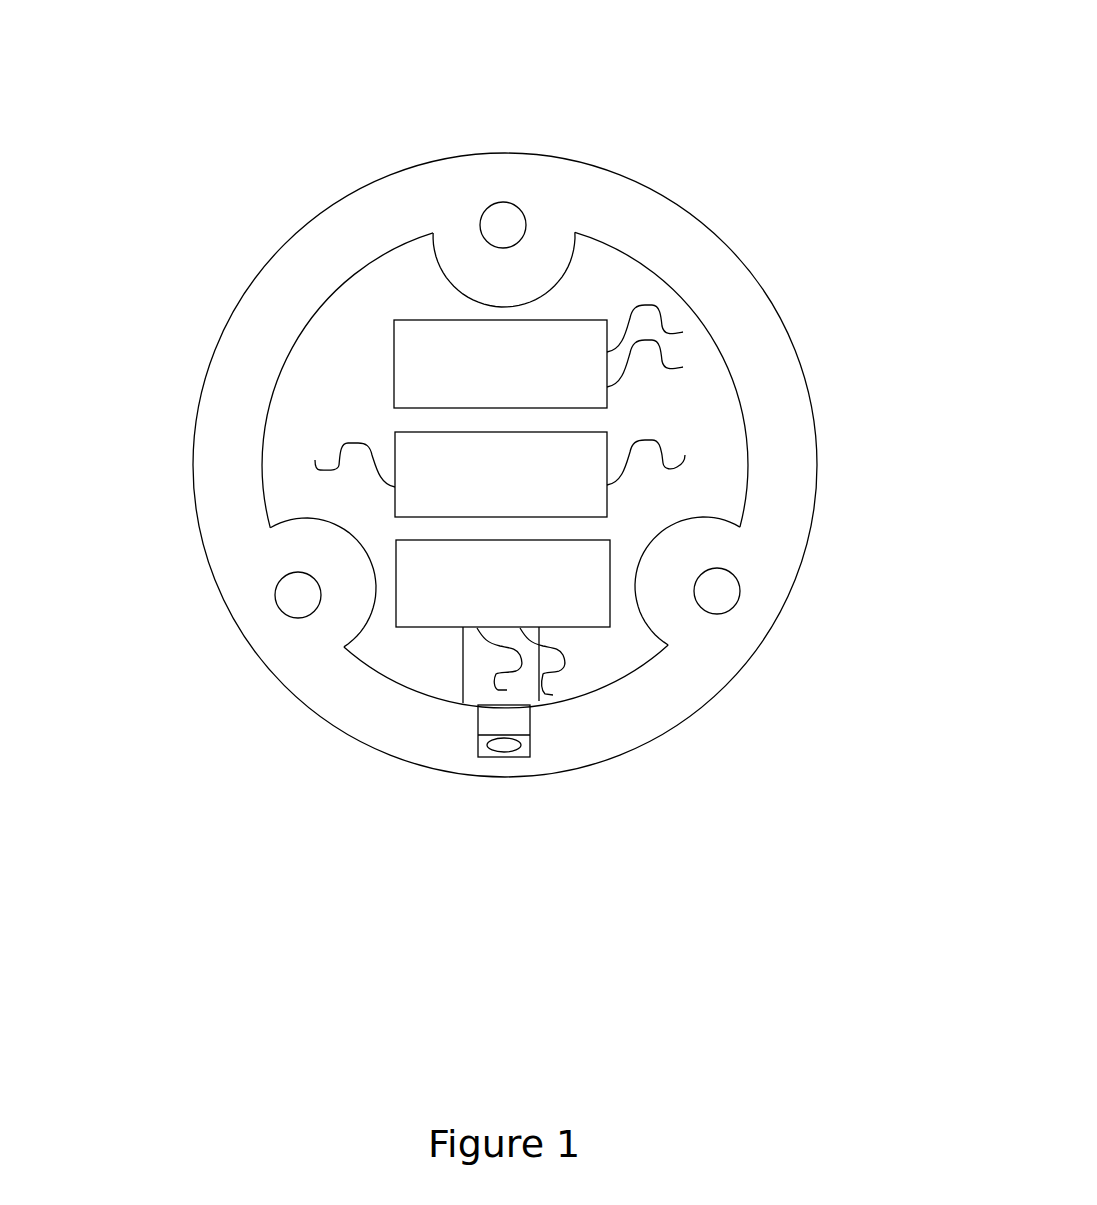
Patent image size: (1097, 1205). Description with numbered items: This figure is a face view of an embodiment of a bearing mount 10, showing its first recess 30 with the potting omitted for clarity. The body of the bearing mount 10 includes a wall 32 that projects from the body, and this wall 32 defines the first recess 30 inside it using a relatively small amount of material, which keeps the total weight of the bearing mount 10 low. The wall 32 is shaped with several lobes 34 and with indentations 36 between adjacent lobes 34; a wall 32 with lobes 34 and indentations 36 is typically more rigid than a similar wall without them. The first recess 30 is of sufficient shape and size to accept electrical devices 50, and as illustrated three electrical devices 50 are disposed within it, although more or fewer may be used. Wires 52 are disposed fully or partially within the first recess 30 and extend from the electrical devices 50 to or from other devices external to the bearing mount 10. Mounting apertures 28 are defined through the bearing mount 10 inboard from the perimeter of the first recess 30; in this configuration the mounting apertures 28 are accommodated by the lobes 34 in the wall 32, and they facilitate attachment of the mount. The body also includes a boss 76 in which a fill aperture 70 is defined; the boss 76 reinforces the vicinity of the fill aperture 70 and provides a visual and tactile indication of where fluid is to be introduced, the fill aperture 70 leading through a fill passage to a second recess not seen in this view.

The bearing mount 10 is at (494, 462).
The mounting apertures 28 is at (503, 222).
The first recess 30 is at (348, 348).
The wall 32 is at (545, 423).
The lobes 34 is at (258, 444).
The indentations 36 is at (504, 306).
The electrical device 50 is at (568, 355).
The wires 52 is at (337, 440).
The fill aperture 70 is at (503, 748).
The boss 76 is at (500, 712).